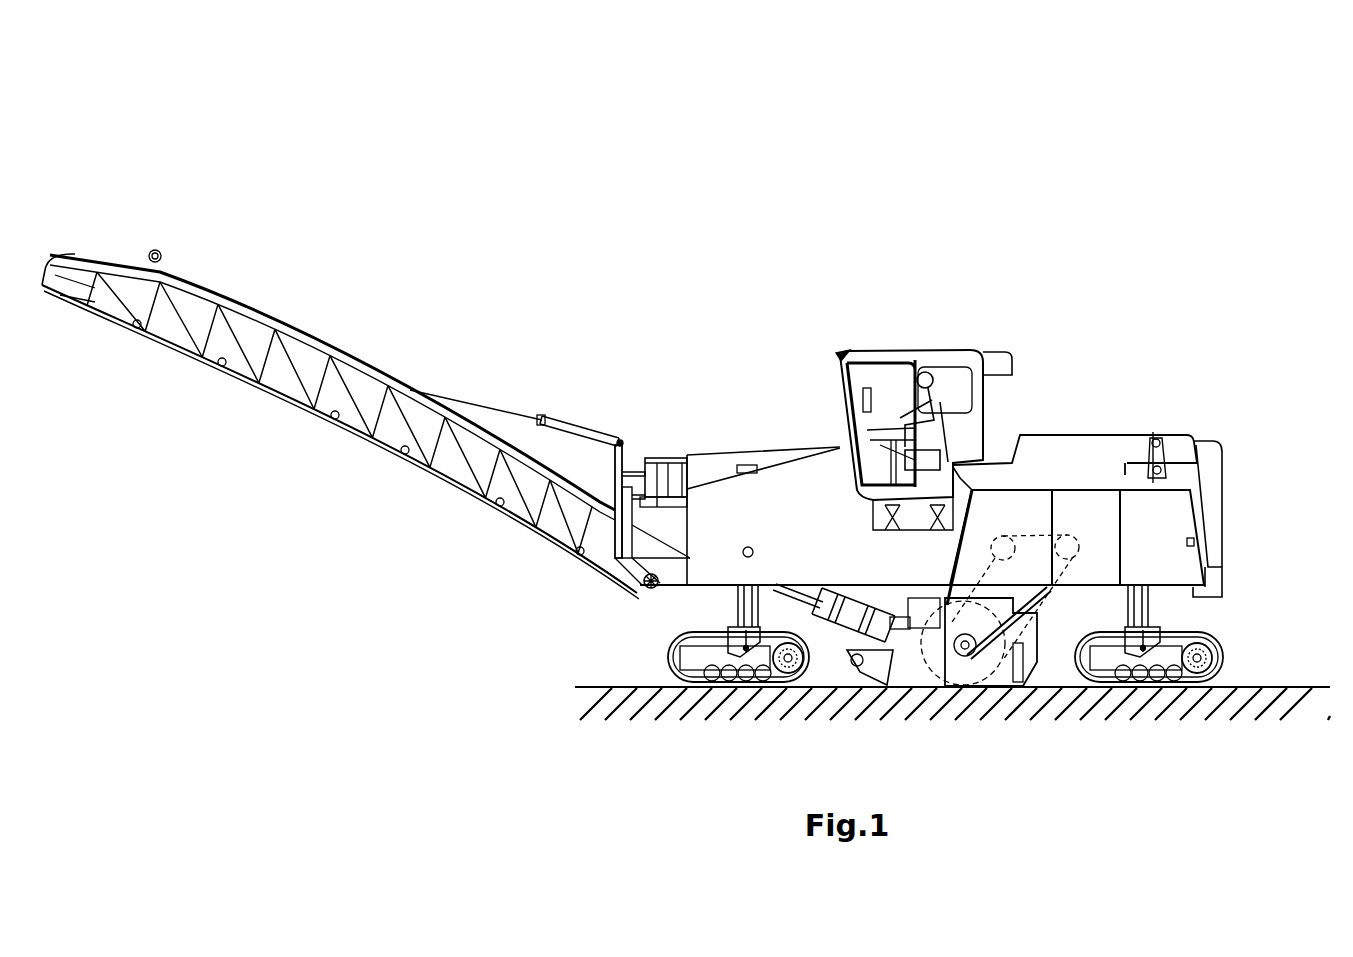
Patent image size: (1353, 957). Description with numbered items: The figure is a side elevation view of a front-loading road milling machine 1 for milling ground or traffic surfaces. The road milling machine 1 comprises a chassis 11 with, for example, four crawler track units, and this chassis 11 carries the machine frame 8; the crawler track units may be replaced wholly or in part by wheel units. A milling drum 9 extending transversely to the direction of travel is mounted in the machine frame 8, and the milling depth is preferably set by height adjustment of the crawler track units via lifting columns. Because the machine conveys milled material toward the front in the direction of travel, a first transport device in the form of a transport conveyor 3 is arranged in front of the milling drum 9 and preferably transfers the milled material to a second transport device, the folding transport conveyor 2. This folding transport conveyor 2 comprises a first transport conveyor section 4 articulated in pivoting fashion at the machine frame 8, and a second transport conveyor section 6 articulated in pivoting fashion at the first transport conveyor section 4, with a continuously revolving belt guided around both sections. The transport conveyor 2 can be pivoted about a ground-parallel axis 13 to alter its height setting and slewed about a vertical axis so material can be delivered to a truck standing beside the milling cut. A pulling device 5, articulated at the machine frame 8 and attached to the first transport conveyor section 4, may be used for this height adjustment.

The road milling machine 1 is at (1007, 464).
The folding transport conveyor 2 is at (366, 355).
The transport conveyor 3 is at (816, 598).
The first transport conveyor section 4 is at (597, 393).
The pulling device 5 is at (565, 410).
The second transport conveyor section 6 is at (211, 250).
The machine frame 8 is at (717, 570).
The milling drum 9 is at (1000, 672).
The chassis 11 is at (1213, 617).
The ground-parallel axis 13 is at (643, 586).